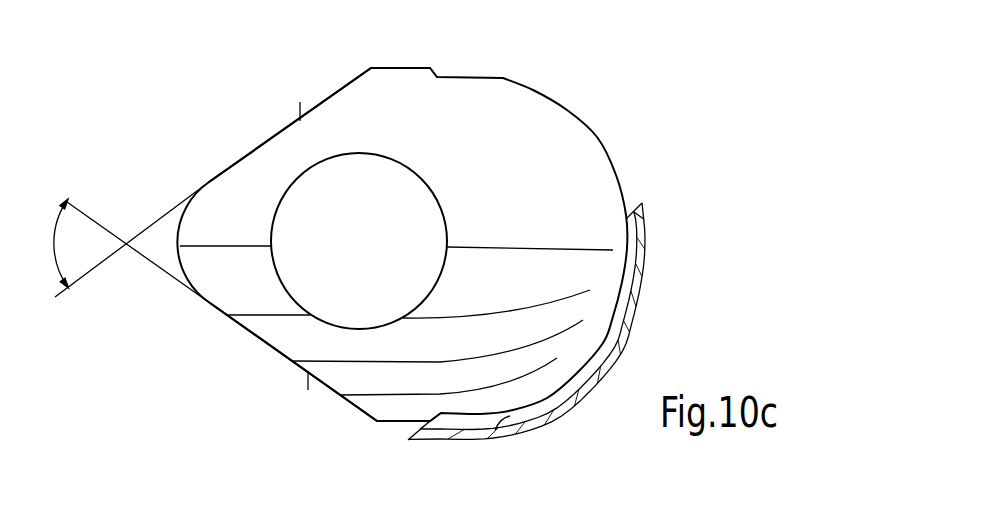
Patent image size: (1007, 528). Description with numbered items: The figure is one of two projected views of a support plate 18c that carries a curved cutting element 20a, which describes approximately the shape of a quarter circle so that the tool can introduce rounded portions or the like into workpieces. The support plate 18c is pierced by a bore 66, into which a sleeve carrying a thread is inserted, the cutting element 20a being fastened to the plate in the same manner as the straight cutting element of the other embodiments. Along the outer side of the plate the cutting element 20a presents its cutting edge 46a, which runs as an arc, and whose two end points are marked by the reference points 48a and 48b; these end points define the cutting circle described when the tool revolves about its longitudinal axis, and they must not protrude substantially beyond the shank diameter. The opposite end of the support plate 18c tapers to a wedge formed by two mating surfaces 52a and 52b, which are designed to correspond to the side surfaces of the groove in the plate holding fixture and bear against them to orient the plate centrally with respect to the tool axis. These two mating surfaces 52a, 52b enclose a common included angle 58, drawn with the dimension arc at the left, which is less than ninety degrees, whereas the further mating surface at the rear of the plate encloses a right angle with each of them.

The disc body 18c is at (552, 157).
The bore 66 is at (277, 212).
The mating surface 52a is at (300, 119).
The mating surface 52b is at (308, 374).
The included angle 58 is at (54, 243).
The cutting edge 46a is at (624, 340).
The reference point 48a is at (640, 218).
The reference point 48b is at (407, 441).
The cutting element 20a is at (495, 430).